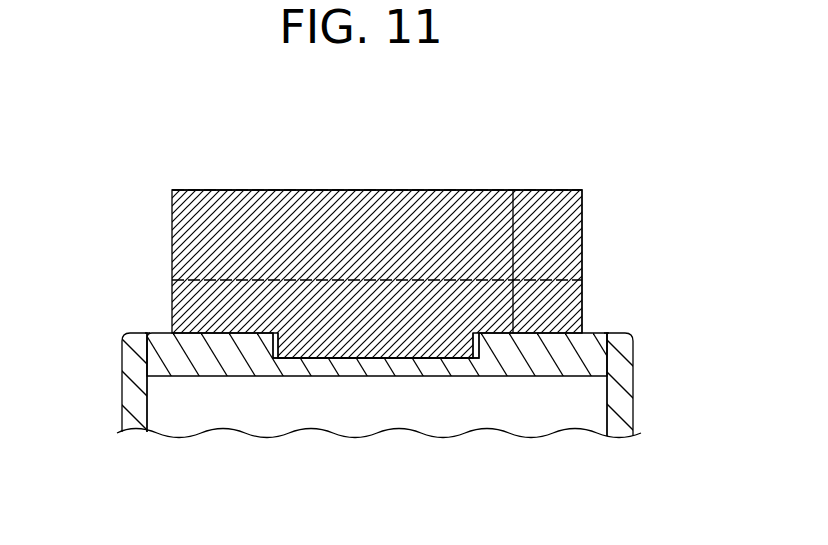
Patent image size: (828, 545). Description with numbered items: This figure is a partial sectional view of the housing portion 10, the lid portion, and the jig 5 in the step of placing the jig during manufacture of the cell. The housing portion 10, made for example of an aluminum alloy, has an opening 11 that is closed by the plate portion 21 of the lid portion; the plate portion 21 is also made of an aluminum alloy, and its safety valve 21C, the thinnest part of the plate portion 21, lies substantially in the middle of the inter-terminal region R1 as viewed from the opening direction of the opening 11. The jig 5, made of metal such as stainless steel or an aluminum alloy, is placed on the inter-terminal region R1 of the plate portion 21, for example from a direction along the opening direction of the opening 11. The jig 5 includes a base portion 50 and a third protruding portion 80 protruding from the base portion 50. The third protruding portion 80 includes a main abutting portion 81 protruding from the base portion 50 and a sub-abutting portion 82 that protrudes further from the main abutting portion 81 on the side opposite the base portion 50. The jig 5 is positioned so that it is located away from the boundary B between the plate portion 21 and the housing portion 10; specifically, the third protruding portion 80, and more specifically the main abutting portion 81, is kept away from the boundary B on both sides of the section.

The jig 5 is at (616, 203).
The housing portion 10 is at (128, 397).
The opening 11 is at (150, 347).
The plate portion 21 is at (508, 363).
The safety valve 21C is at (390, 358).
The base portion 50 is at (207, 233).
The third protruding portion 80 is at (377, 236).
The main abutting portion 81 is at (347, 300).
The sub-abutting portion 82 is at (387, 333).
The inter-terminal region R1 is at (514, 190).
The boundary B is at (148, 334).